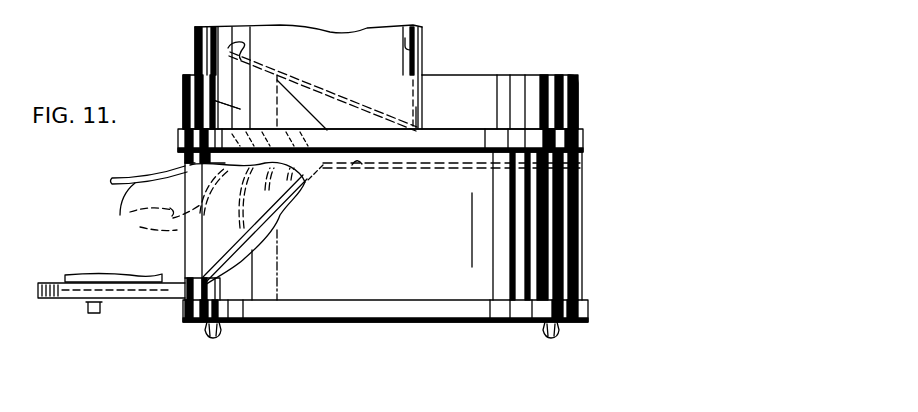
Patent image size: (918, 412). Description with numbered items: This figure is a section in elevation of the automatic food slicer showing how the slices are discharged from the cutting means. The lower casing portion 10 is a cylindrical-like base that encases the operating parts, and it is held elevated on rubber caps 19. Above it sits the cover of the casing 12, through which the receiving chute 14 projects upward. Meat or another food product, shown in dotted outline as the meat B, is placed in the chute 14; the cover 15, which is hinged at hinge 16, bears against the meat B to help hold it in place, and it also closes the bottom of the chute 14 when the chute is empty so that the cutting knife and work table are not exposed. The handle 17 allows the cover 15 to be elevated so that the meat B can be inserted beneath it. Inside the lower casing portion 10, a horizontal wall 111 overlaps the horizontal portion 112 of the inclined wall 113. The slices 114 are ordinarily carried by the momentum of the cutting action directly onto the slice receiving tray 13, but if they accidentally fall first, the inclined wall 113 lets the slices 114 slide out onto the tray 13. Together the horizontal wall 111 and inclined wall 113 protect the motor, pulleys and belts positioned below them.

The lower casing portion 10 is at (556, 240).
The cover of the casing 12 is at (578, 87).
The slice receiving tray 13 is at (50, 283).
The receiving chute 14 is at (422, 48).
The cover 15 is at (328, 92).
The hinge 16 is at (413, 103).
The handle 17 is at (228, 48).
The rubber caps 19 is at (210, 338).
The horizontal wall 111 is at (453, 170).
The horizontal portion of the inclined wall 112 is at (362, 170).
The inclined wall 113 is at (305, 182).
The slices 114 is at (177, 231).
The meat B is at (178, 83).